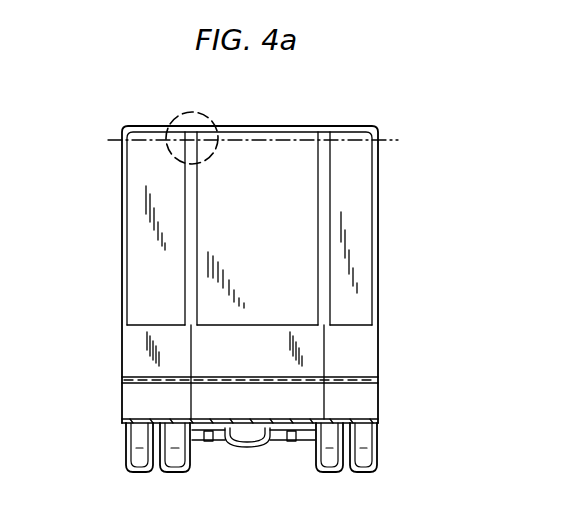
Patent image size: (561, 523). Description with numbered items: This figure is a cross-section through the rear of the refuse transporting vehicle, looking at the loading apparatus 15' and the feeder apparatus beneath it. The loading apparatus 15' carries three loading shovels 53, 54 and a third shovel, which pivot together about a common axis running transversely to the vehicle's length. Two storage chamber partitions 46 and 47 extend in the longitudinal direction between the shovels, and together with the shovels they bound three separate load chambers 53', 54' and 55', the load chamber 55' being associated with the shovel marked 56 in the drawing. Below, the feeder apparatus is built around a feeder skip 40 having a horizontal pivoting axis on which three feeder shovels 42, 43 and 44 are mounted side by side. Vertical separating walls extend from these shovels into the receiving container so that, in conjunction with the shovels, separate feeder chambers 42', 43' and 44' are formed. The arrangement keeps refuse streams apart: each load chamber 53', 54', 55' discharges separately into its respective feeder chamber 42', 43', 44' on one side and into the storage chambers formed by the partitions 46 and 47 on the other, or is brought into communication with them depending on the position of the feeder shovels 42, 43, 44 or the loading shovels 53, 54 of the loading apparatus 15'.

The loading apparatus 15' is at (281, 292).
The left rear panel 56 is at (130, 164).
The load chamber 55' is at (111, 244).
The loading shovel 54 is at (257, 258).
The load chamber 54' is at (257, 258).
The loading shovel 53 is at (399, 237).
The load chamber 53' is at (399, 237).
The storage chamber partition 46 is at (192, 356).
The storage chamber partition 47 is at (365, 332).
The feeder skip 40 is at (135, 343).
The feeder shovel 44 is at (219, 398).
The feeder chamber 44' is at (98, 368).
The feeder shovel 42 is at (273, 375).
The feeder chamber 42' is at (394, 340).
The feeder shovel 43 is at (250, 360).
The feeder chamber 43' is at (242, 386).